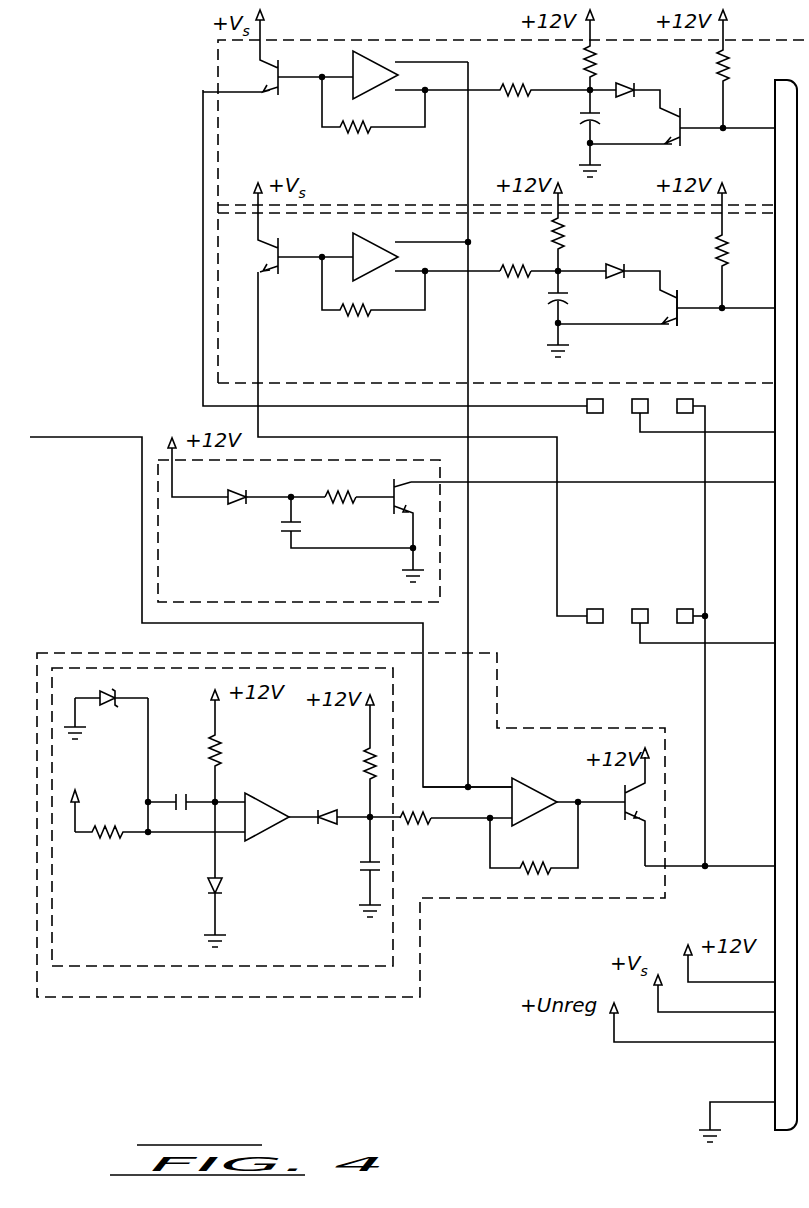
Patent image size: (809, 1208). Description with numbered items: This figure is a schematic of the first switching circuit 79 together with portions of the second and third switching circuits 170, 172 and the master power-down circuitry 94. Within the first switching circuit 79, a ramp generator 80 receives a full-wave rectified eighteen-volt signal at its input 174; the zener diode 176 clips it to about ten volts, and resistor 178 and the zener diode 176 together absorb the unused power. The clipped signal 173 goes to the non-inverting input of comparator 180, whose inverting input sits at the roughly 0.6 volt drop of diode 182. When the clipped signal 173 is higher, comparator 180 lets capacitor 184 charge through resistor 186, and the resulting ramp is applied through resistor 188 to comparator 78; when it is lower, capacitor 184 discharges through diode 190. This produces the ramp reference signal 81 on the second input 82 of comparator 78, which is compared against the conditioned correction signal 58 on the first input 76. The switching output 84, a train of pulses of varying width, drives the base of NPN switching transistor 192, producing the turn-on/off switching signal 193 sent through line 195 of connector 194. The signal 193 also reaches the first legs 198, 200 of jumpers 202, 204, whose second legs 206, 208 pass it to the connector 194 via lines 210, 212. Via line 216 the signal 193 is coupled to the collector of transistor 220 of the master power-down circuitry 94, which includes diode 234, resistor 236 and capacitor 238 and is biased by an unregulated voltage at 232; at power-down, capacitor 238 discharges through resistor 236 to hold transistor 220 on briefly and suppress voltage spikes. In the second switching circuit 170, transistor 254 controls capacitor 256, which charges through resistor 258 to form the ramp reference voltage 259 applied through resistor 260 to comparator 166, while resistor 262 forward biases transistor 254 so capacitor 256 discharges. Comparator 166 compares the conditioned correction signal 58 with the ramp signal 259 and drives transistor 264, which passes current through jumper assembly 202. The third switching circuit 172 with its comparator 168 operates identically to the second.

The third switching circuit 172 is at (218, 46).
The comparator 168 is at (374, 68).
The conditioned correction signal 58 is at (421, 242).
The comparator 166 is at (370, 260).
The transistor 264 is at (272, 260).
The ramp reference voltage 259 is at (446, 275).
The second switching circuit 170 is at (318, 383).
The resistor 260 is at (507, 268).
The resistor 258 is at (563, 236).
The resistor 262 is at (720, 253).
The capacitor 256 is at (555, 300).
The transistor 254 is at (672, 318).
The second leg of jumper 208 is at (645, 399).
The first leg of jumper 200 is at (686, 399).
The jumper 204 is at (624, 426).
The line 212 is at (722, 433).
The line 216 is at (637, 483).
The second leg of jumper 206 is at (640, 609).
The first leg of jumper 198 is at (685, 609).
The jumper 202 is at (614, 638).
The line 210 is at (708, 655).
The unregulated positive voltage input 232 is at (170, 437).
The diode 234 is at (233, 505).
The resistor 236 is at (340, 500).
The capacitor 238 is at (287, 540).
The master power-down circuitry 94 is at (158, 565).
The NPN transistor 220 is at (398, 497).
The zener diode 176 is at (110, 690).
The input of ramp generator 174 is at (86, 796).
The resistor 178 is at (103, 846).
The clipped signal 173 is at (175, 836).
The comparator 180 is at (272, 808).
The diode 182 is at (220, 888).
The resistor 186 is at (368, 758).
The diode 190 is at (332, 822).
The capacitor 184 is at (368, 871).
The resistor 188 is at (423, 826).
The first input of comparator 76 is at (492, 790).
The comparator 78 is at (540, 796).
The ramp reference signal 81 is at (470, 823).
The second input of comparator 82 is at (500, 821).
The switching output 84 is at (600, 806).
The NPN switching transistor 192 is at (650, 797).
The connector 194 is at (775, 725).
The line 195 is at (745, 866).
The turn-on/off switching signal 193 is at (683, 878).
The ramp generator 80 is at (110, 968).
The first switching circuit 79 is at (345, 998).